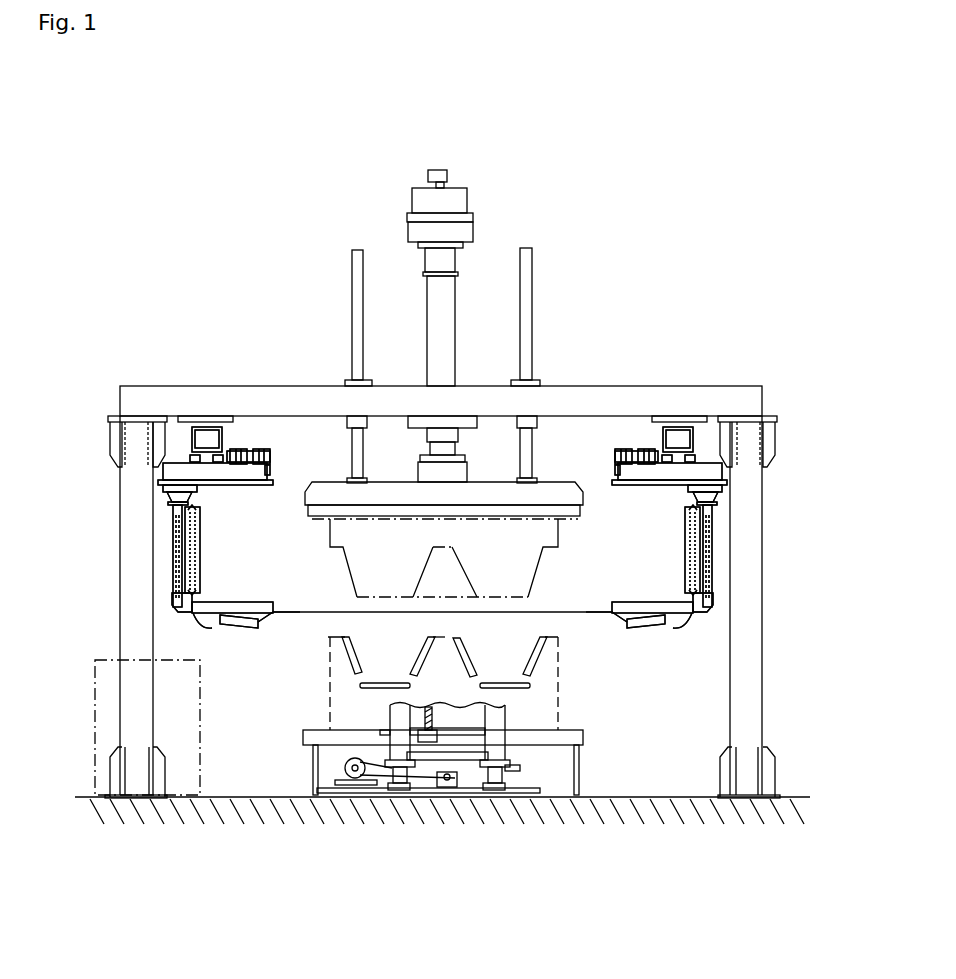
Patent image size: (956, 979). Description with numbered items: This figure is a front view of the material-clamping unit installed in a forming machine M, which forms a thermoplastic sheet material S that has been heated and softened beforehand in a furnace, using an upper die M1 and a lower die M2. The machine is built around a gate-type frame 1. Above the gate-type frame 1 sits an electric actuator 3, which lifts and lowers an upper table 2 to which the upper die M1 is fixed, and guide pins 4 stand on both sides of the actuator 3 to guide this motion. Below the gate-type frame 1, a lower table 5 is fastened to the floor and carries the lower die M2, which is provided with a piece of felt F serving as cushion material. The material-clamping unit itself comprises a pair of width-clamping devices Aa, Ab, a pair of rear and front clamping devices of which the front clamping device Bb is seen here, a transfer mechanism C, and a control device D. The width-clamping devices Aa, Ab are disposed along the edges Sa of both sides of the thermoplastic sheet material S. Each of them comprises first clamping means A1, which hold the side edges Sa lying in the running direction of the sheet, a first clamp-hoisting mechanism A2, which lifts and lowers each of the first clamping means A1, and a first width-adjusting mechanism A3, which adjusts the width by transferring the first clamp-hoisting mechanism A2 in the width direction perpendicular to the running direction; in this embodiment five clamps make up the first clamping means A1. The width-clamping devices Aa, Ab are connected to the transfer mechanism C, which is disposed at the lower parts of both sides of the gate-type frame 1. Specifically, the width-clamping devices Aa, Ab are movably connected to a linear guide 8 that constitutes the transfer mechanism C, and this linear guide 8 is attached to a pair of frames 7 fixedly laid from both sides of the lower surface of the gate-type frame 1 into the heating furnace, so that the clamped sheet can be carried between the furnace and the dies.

The gate-type frame 1 is at (210, 402).
The upper table 2 is at (458, 493).
The electric actuator 3 is at (442, 200).
The guide pins 4 is at (357, 270).
The lower table 5 is at (560, 773).
The frames 7 is at (238, 455).
The linear guide 8 is at (197, 457).
The transfer mechanism C is at (182, 456).
The forming machine M is at (250, 361).
The upper die M1 is at (470, 545).
The lower die M2 is at (535, 675).
The thermoplastic sheet material S is at (427, 613).
The edges Sa is at (277, 613).
The felt F is at (400, 662).
The front clamping device Bb is at (548, 758).
The control device D is at (110, 718).
The first clamping means A1 is at (203, 632).
The first clamp-hoisting mechanism A2 is at (170, 557).
The first width-adjusting mechanism A3 is at (165, 498).
The width-clamping device Aa is at (233, 520).
The width-clamping device Ab is at (657, 505).